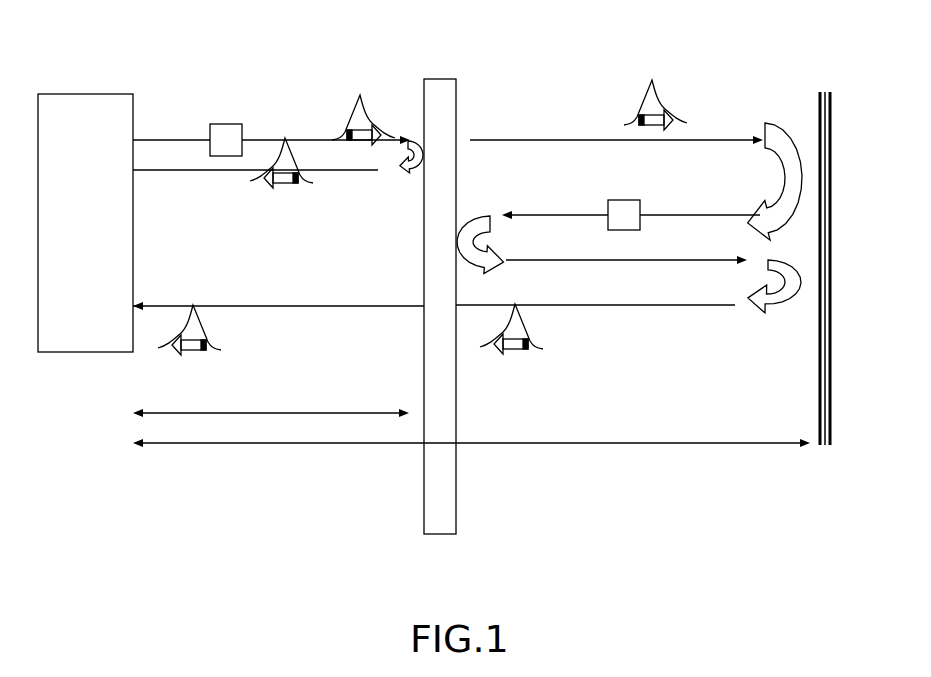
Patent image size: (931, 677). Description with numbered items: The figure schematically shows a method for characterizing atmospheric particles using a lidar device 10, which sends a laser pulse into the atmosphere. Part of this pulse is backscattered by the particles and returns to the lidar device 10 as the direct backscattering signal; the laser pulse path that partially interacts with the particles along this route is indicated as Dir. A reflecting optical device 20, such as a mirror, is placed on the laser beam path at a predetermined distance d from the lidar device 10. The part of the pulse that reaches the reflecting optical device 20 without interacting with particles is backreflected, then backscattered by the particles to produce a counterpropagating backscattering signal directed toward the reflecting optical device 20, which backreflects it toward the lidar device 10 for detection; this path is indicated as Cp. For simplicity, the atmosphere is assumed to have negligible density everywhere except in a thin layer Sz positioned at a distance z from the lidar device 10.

The lidar device 10 is at (86, 89).
The reflecting optical device 20 is at (840, 300).
The thin layer Sz is at (442, 543).
The direct laser pulse path Dir is at (226, 140).
The counterpropagating laser pulse path Cp is at (624, 215).
The distance of the thin layer z is at (271, 404).
The predetermined distance d is at (471, 433).